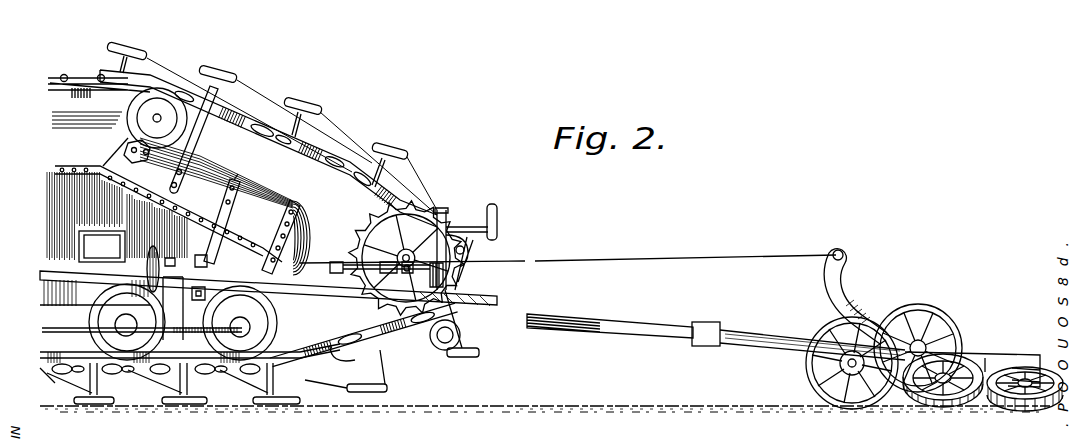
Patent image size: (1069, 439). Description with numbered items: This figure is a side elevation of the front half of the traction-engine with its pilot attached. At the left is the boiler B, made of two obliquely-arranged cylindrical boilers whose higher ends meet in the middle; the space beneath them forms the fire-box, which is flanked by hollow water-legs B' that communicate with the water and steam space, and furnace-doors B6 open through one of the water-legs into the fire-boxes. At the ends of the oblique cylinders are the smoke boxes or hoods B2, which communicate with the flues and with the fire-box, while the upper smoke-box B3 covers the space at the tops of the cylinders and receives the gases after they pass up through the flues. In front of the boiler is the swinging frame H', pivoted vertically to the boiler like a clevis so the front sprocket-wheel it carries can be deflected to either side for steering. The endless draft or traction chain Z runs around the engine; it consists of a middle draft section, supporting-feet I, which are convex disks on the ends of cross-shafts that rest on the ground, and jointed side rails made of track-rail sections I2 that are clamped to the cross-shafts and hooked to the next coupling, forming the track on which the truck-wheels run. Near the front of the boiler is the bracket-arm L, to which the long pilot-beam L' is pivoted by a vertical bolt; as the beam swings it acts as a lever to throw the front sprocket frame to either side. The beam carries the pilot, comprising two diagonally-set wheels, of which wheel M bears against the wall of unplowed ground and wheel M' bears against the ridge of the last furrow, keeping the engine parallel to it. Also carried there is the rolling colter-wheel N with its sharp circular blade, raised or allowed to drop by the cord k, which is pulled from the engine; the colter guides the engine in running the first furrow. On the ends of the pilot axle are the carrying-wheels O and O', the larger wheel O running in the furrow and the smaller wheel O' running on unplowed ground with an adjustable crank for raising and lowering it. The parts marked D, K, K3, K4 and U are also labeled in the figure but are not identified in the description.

The boiler B is at (168, 214).
The water-legs B' is at (117, 216).
The smoke boxes or hoods B2 is at (281, 237).
The smoke-box B3 is at (87, 131).
The furnace-doors B6 is at (102, 246).
The carriage wheels D is at (183, 322).
The swinging frame H' is at (268, 297).
The supporting-feet I is at (389, 163).
The track-rail sections I2 is at (215, 110).
The gear wheel K is at (358, 228).
The gear mechanism K3 is at (378, 261).
The lower chain bar K4 is at (364, 333).
The bracket-arm L is at (222, 219).
The pilot-beam L' is at (514, 305).
The conveyor belt U is at (216, 173).
The draft or traction chain Z is at (268, 142).
The cord k is at (568, 254).
The colter-wheel N is at (935, 320).
The carrying-wheel O is at (842, 363).
The carrying-wheel O' is at (824, 372).
The pilot-wheel M is at (947, 371).
The pilot-wheel M' is at (1025, 402).